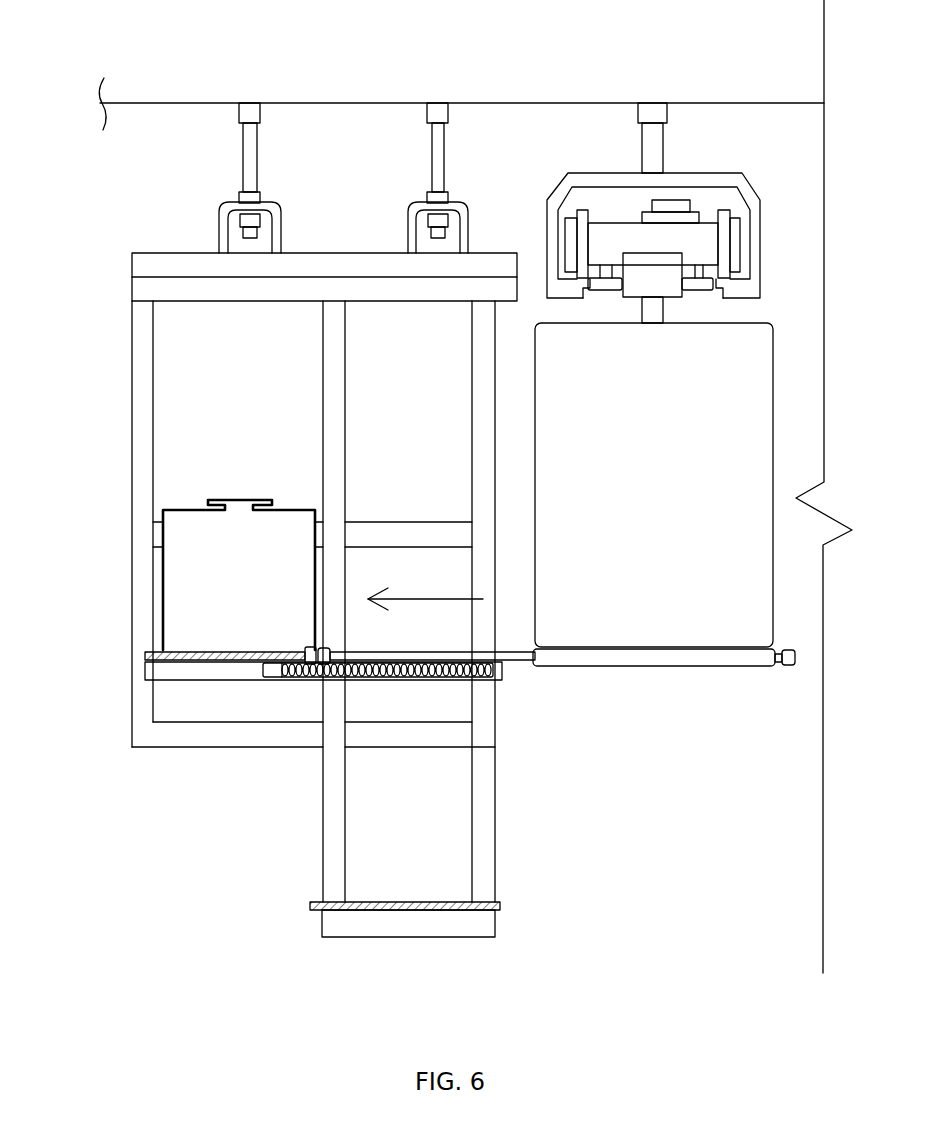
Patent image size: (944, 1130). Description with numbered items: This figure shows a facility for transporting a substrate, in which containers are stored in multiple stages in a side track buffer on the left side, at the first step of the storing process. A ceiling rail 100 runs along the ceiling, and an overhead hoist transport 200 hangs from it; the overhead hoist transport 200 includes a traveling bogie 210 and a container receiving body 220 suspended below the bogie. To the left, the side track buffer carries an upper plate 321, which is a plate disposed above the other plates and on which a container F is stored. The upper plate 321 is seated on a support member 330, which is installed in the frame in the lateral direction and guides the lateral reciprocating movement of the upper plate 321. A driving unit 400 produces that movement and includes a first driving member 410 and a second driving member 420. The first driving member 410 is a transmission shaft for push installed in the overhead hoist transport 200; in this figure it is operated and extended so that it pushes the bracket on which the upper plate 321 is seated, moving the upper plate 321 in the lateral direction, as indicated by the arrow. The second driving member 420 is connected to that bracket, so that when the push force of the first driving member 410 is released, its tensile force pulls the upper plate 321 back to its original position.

The ceiling rail 100 is at (717, 173).
The overhead hoist transport 200 is at (623, 333).
The traveling bogie 210 is at (610, 222).
The container receiving body 220 is at (542, 322).
The upper plate 321 is at (233, 650).
The support member 330 is at (208, 682).
The driving unit 400 is at (468, 684).
The first driving member 410 is at (460, 650).
The second driving member 420 is at (432, 677).
The container F is at (238, 500).